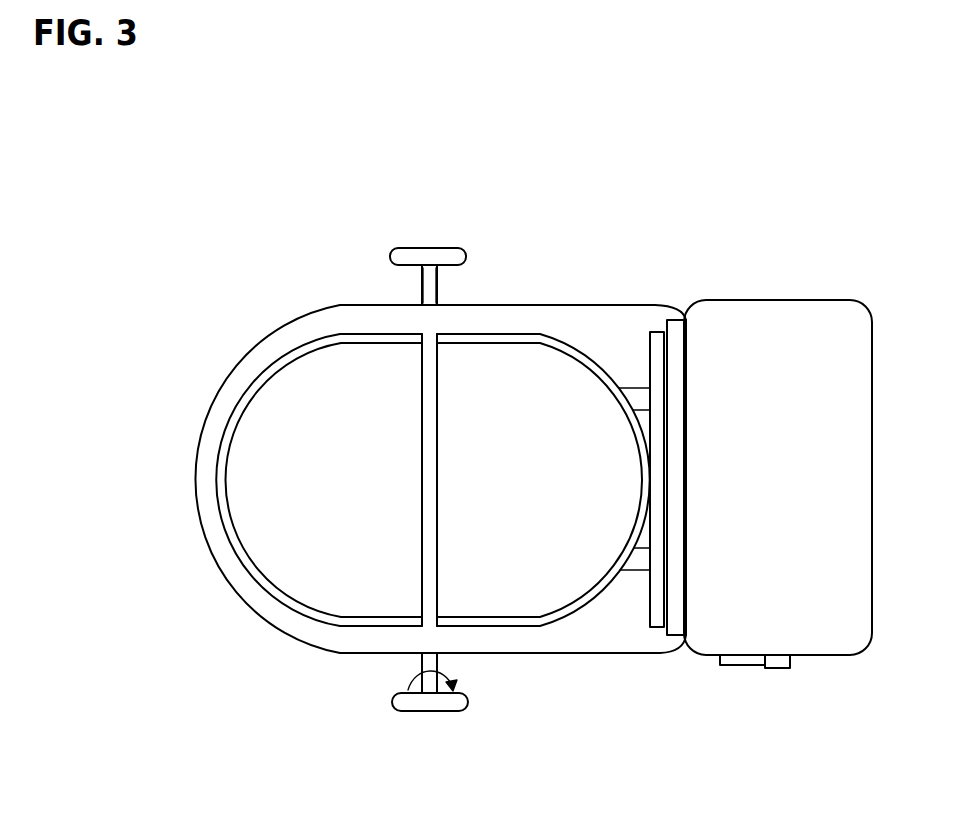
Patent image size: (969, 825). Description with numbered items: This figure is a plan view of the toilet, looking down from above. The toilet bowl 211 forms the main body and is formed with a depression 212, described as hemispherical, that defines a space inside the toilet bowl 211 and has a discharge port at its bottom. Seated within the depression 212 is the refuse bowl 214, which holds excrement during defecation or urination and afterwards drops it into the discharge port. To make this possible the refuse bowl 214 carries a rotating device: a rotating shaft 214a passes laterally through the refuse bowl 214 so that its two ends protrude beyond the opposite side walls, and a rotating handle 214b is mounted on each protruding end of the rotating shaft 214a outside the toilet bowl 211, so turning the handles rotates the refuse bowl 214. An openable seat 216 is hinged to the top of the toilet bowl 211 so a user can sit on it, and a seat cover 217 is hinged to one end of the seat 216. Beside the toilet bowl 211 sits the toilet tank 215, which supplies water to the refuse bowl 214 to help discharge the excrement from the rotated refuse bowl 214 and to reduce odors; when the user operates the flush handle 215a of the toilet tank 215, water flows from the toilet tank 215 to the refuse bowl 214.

The toilet bowl 211 is at (207, 480).
The depression 212 is at (308, 610).
The refuse bowl 214 is at (542, 370).
The rotating shaft 214a is at (427, 295).
The rotating handle 214b is at (446, 250).
The toilet tank 215 is at (820, 325).
The flush handle 215a is at (777, 658).
The seat 216 is at (660, 610).
The seat cover 217 is at (688, 349).